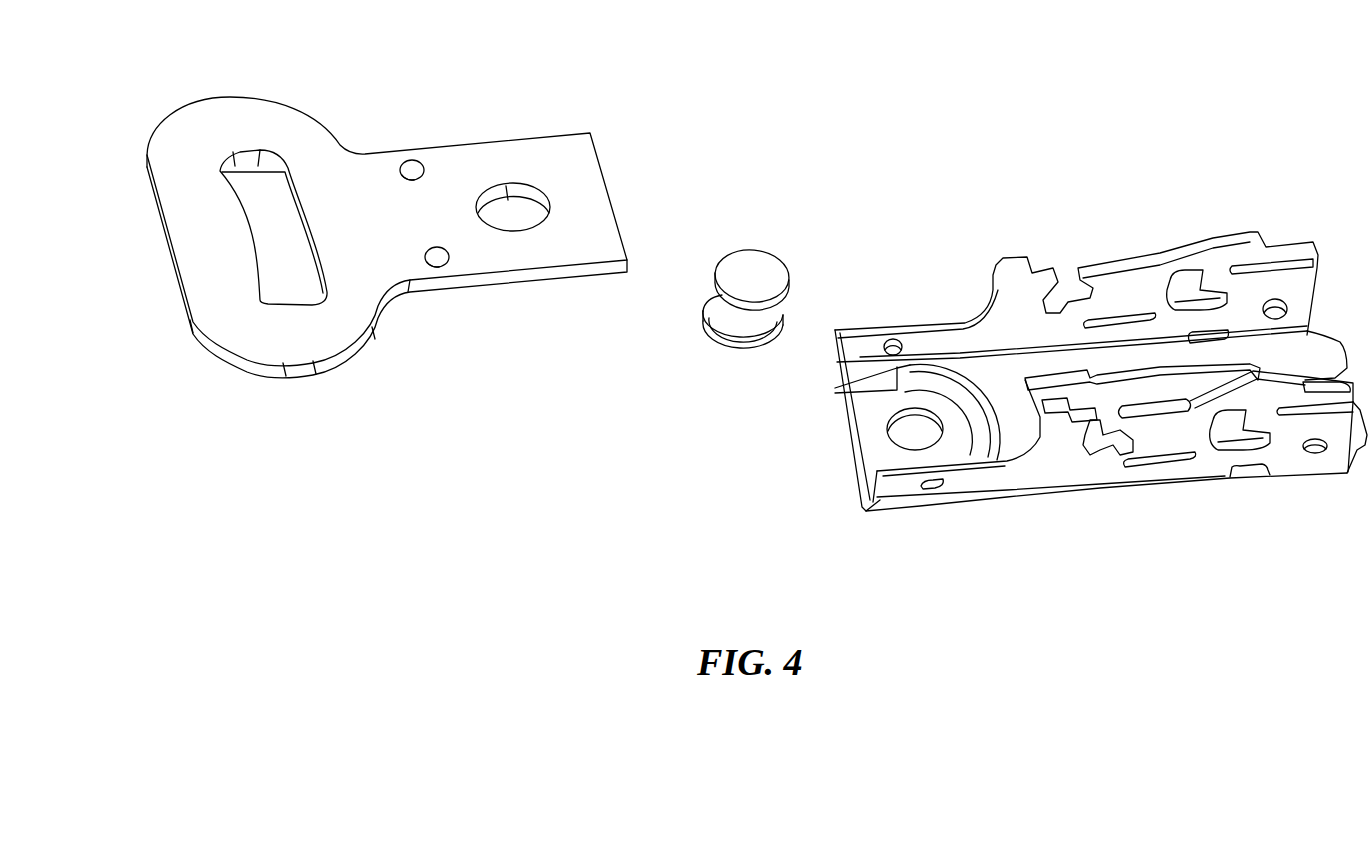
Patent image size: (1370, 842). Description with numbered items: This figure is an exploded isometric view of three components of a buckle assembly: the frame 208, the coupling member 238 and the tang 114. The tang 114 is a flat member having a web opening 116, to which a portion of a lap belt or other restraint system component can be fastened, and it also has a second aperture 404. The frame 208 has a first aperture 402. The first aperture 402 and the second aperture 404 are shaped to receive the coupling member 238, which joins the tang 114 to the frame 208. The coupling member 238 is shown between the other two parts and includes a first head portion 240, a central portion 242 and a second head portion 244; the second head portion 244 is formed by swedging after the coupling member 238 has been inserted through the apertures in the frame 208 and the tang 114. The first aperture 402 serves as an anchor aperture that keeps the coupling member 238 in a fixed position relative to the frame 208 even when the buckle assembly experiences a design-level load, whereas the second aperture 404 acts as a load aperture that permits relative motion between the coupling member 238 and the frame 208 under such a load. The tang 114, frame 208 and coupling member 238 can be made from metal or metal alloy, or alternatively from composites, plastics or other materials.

The tang 114 is at (183, 117).
The web opening 116 is at (253, 150).
The second aperture 404 is at (518, 185).
The coupling member 238 is at (752, 262).
The second head portion 244 is at (710, 278).
The central portion 242 is at (748, 323).
The first head portion 240 is at (707, 327).
The frame 208 is at (1053, 477).
The first aperture 402 is at (913, 413).